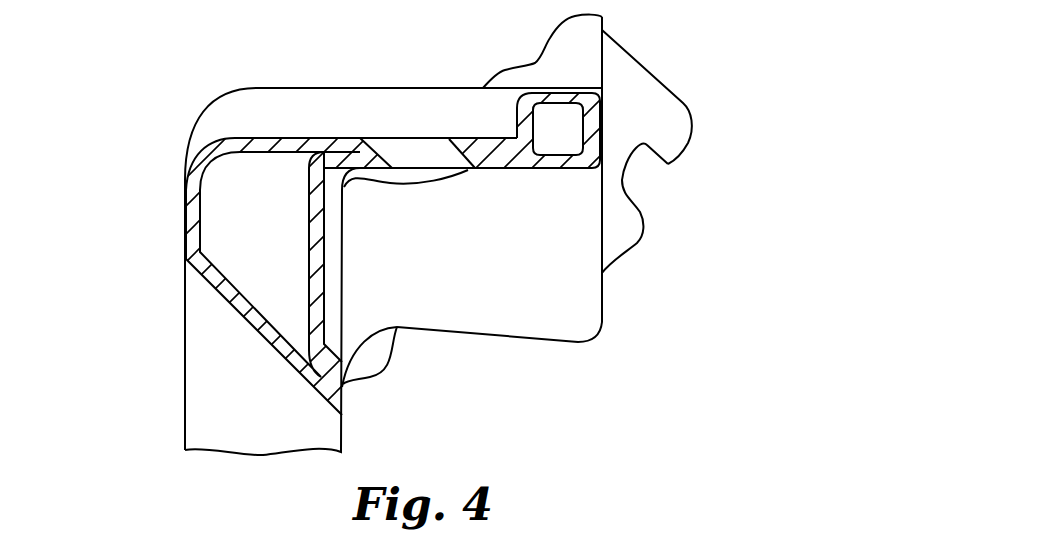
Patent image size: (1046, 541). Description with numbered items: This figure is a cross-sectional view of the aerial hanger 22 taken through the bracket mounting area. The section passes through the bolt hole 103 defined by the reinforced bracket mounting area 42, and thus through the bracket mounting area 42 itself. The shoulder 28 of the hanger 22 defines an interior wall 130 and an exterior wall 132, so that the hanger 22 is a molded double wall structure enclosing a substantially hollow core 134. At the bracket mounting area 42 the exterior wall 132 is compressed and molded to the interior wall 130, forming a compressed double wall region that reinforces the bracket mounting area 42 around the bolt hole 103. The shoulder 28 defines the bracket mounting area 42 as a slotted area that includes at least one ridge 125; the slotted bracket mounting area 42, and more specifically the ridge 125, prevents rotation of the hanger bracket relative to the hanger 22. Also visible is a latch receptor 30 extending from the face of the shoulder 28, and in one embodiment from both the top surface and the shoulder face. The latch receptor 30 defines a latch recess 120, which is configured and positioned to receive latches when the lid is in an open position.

The aerial hanger 22 is at (256, 54).
The shoulder 28 is at (305, 95).
The latch receptor 30 is at (644, 81).
The bracket mounting area 42 is at (473, 138).
The bolt hole 103 is at (410, 157).
The latch recess 120 is at (643, 167).
The ridge 125 is at (396, 97).
The interior wall 130 is at (318, 282).
The exterior wall 132 is at (553, 97).
The hollow core 134 is at (575, 122).